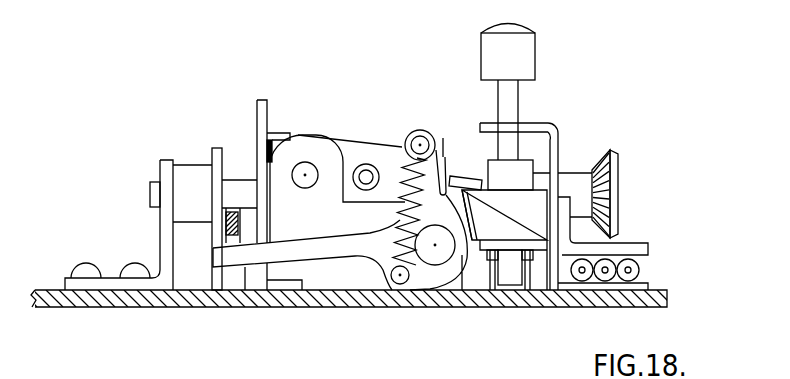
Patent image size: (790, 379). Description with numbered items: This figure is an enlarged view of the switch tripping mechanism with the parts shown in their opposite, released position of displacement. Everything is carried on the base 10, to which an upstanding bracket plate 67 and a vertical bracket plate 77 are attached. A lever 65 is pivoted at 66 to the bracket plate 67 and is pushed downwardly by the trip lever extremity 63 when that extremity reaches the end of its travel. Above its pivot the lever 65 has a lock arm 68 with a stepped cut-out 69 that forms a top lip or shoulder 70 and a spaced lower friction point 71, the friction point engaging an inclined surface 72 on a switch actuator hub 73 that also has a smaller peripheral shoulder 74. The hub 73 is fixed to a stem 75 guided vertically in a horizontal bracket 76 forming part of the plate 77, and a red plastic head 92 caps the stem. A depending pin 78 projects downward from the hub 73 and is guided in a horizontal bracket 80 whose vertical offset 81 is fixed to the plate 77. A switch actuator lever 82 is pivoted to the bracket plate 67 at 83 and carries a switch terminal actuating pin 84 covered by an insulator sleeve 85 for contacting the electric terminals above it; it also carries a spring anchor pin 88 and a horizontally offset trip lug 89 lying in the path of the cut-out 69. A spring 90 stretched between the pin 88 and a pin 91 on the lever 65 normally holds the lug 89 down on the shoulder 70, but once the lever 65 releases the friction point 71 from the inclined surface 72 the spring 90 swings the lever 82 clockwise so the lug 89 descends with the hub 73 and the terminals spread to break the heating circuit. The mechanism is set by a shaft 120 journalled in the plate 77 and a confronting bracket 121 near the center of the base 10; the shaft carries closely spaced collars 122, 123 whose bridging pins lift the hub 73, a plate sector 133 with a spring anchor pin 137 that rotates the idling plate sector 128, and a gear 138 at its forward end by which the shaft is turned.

The base 10 is at (647, 308).
The trip lever extremity 63 is at (240, 225).
The lever 65 is at (298, 252).
The pivot 66 is at (435, 262).
The bracket plate 67 is at (337, 283).
The lock arm 68 is at (443, 143).
The stepped cut-out 69 is at (445, 160).
The top lip or shoulder 70 is at (448, 197).
The friction point 71 is at (466, 203).
The inclined surface 72 is at (472, 222).
The switch actuator hub 73 is at (532, 205).
The peripheral shoulder 74 is at (520, 165).
The stem 75 is at (515, 98).
The horizontal bracket 76 is at (495, 127).
The bracket plate 77 is at (560, 135).
The depending pin 78 is at (510, 280).
The horizontal bracket 80 is at (508, 246).
The vertical offset 81 is at (528, 280).
The switch actuator lever 82 is at (343, 155).
The pivot 83 is at (305, 190).
The switch terminal actuating pin 84 is at (362, 168).
The insulator sleeve 85 is at (367, 168).
The spring anchor pin 88 is at (412, 140).
The trip lug 89 is at (455, 176).
The spring 90 is at (405, 208).
The pin 91 is at (398, 285).
The red plastic head 92 is at (530, 42).
The shaft 120 is at (150, 190).
The bracket 121 is at (165, 243).
The collar 122 is at (527, 285).
The collar 123 is at (490, 278).
The plate sector 128 is at (215, 150).
The plate sector 133 is at (258, 110).
The pin 137 is at (275, 140).
The gear 138 is at (615, 155).